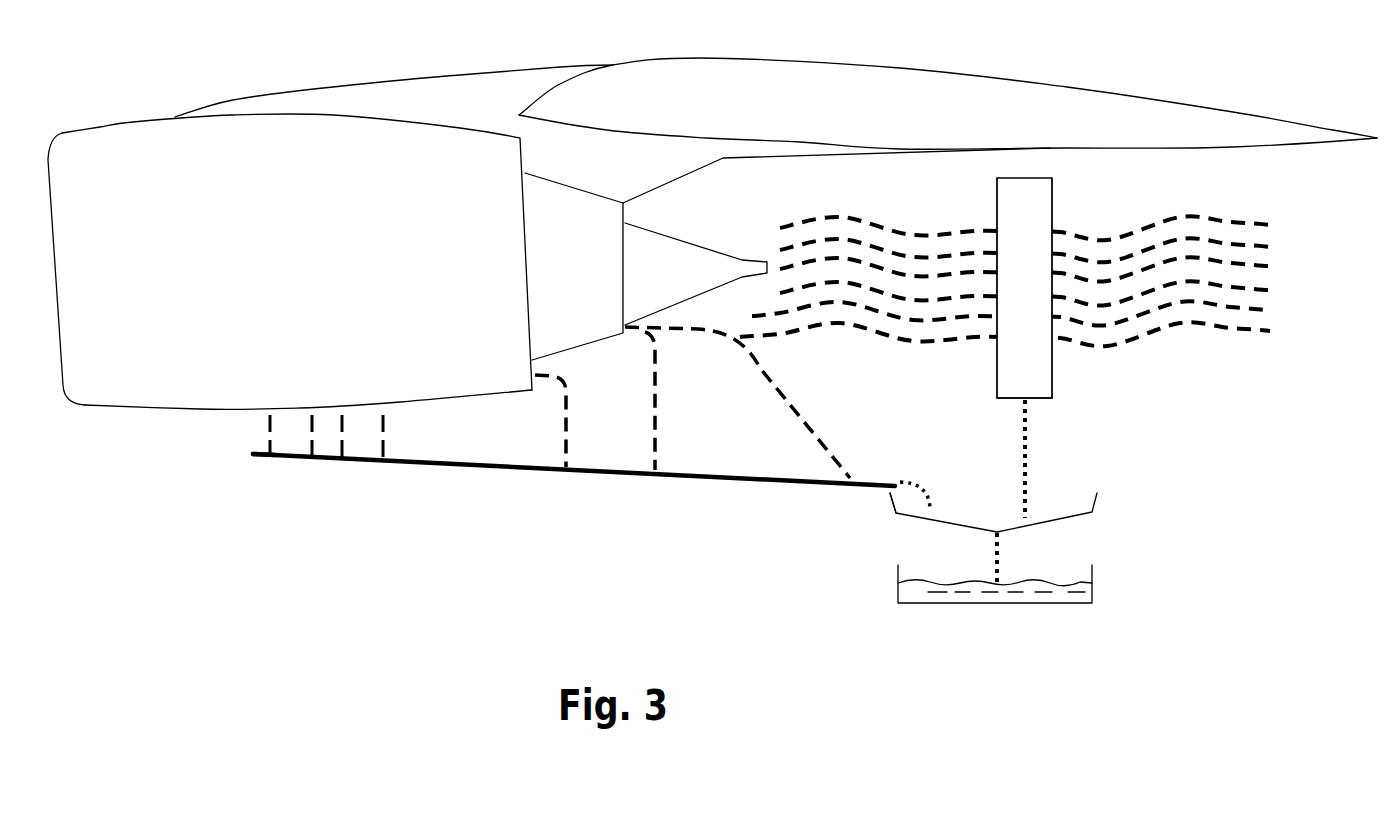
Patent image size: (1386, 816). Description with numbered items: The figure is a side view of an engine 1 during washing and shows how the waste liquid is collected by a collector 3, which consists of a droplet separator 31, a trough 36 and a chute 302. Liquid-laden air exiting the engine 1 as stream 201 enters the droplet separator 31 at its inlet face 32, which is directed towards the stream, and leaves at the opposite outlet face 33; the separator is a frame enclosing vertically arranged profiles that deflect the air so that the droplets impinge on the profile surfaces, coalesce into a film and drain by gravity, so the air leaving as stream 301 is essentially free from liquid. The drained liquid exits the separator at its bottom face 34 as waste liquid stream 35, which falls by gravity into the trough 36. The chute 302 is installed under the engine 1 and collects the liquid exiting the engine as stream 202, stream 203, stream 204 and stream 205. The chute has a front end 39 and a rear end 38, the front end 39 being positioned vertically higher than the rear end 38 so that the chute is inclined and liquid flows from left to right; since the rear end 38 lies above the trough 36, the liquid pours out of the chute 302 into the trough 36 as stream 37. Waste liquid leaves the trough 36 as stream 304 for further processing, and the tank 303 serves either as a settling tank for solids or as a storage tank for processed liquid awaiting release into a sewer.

The engine 1 is at (108, 170).
The collector 3 is at (1220, 472).
The stream 201 is at (950, 237).
The stream 202 is at (773, 383).
The stream 203 is at (655, 415).
The stream 204 is at (563, 453).
The stream 205 is at (298, 427).
The stream 301 is at (1215, 332).
The chute 302 is at (533, 472).
The tank 303 is at (1092, 595).
The stream 304 is at (998, 563).
The droplet separator 31 is at (1030, 200).
The inlet face 32 is at (997, 365).
The outlet face 33 is at (1052, 380).
The face 34 is at (1045, 400).
The waste liquid stream 35 is at (1023, 447).
The trough 36 is at (1077, 500).
The stream 37 is at (927, 492).
The rear end 38 is at (888, 483).
The front end 39 is at (250, 453).